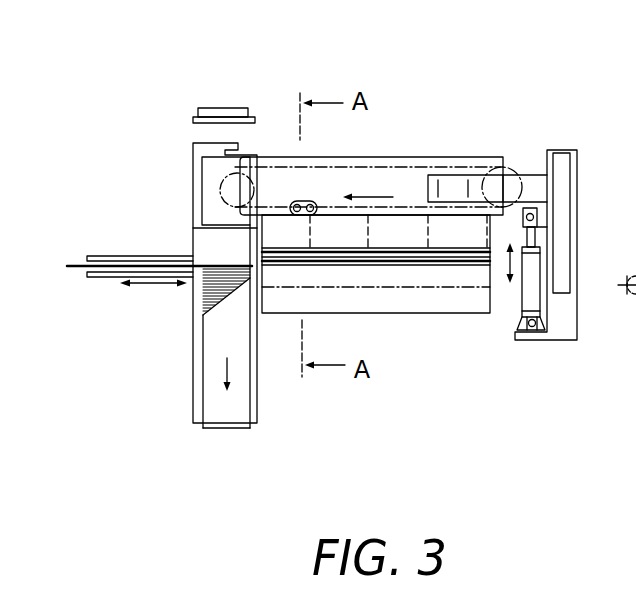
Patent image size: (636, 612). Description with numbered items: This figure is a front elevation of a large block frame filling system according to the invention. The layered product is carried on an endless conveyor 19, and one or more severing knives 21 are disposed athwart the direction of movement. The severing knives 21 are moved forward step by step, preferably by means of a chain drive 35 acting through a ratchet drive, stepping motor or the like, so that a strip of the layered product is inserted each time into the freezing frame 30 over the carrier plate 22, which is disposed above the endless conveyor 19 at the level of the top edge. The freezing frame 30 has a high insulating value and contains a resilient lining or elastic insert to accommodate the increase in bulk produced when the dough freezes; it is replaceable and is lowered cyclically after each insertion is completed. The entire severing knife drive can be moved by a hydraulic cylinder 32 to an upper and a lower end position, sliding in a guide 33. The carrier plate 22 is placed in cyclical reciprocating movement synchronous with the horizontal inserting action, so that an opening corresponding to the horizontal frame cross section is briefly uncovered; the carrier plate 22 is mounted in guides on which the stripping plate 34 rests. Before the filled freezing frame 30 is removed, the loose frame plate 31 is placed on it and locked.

The endless conveyor 19 is at (440, 314).
The severing knife 21 is at (415, 216).
The carrier plate 22 is at (77, 266).
The freezing frame 30 is at (218, 422).
The loose frame plate 31 is at (212, 117).
The hydraulic cylinder 32 is at (528, 338).
The guide 33 is at (108, 278).
The stripping plate 34 is at (190, 248).
The chain drive 35 is at (300, 201).